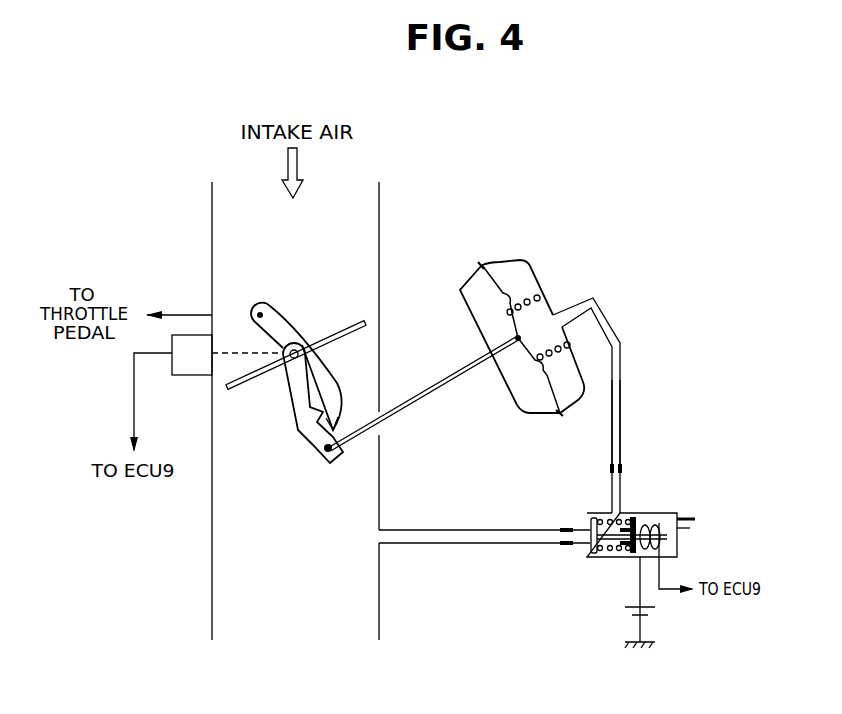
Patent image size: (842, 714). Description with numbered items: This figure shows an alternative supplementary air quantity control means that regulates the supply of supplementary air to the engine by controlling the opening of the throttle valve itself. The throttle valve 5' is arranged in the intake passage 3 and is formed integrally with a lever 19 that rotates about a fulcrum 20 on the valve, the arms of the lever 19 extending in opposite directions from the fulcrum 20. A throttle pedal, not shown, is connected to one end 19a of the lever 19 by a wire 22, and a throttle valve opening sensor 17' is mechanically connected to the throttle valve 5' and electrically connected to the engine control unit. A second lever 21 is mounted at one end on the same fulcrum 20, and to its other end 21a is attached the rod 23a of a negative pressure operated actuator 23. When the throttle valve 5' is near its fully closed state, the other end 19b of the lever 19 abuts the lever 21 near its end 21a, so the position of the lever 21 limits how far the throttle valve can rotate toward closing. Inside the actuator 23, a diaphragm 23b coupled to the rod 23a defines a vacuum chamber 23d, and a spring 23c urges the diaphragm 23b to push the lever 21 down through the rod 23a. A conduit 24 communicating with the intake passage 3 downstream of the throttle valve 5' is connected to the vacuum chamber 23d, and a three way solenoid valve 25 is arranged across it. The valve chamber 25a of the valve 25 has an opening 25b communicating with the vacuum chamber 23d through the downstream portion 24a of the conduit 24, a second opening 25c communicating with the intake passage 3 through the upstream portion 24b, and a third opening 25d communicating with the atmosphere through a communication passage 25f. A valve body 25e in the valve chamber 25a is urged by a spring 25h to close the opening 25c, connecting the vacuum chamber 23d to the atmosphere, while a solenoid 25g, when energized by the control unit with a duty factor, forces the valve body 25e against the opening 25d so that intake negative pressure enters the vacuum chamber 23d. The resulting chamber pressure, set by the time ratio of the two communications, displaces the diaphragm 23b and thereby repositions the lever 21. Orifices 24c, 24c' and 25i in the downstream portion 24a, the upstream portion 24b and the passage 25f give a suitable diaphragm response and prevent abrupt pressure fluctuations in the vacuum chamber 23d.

The intake passage 3 is at (381, 216).
The throttle valve 5' is at (298, 322).
The throttle valve opening sensor 17' is at (206, 393).
The lever 19 is at (330, 371).
The end of lever 19a is at (264, 304).
The other end of lever 19b is at (335, 428).
The fulcrum 20 is at (296, 343).
The second lever 21 is at (300, 428).
The other end of second lever 21a is at (327, 457).
The wire 22 is at (181, 310).
The negative pressure operated actuator 23 is at (559, 318).
The rod 23a is at (412, 406).
The diaphragm 23b is at (535, 360).
The spring 23c is at (533, 295).
The vacuum chamber 23d is at (533, 328).
The conduit 24 is at (617, 405).
The downstream portion of conduit 24a is at (616, 435).
The upstream portion of conduit 24b is at (484, 545).
The orifice 24c is at (641, 452).
The orifice 24c' is at (543, 518).
The three way solenoid valve 25 is at (625, 555).
The valve chamber 25a is at (598, 514).
The opening 25b is at (610, 512).
The second opening 25c is at (590, 547).
The third opening 25d is at (626, 516).
The valve body 25e is at (590, 558).
The communication passage 25f is at (690, 525).
The solenoid 25g is at (652, 552).
The spring 25h is at (610, 557).
The orifice 25i is at (684, 528).